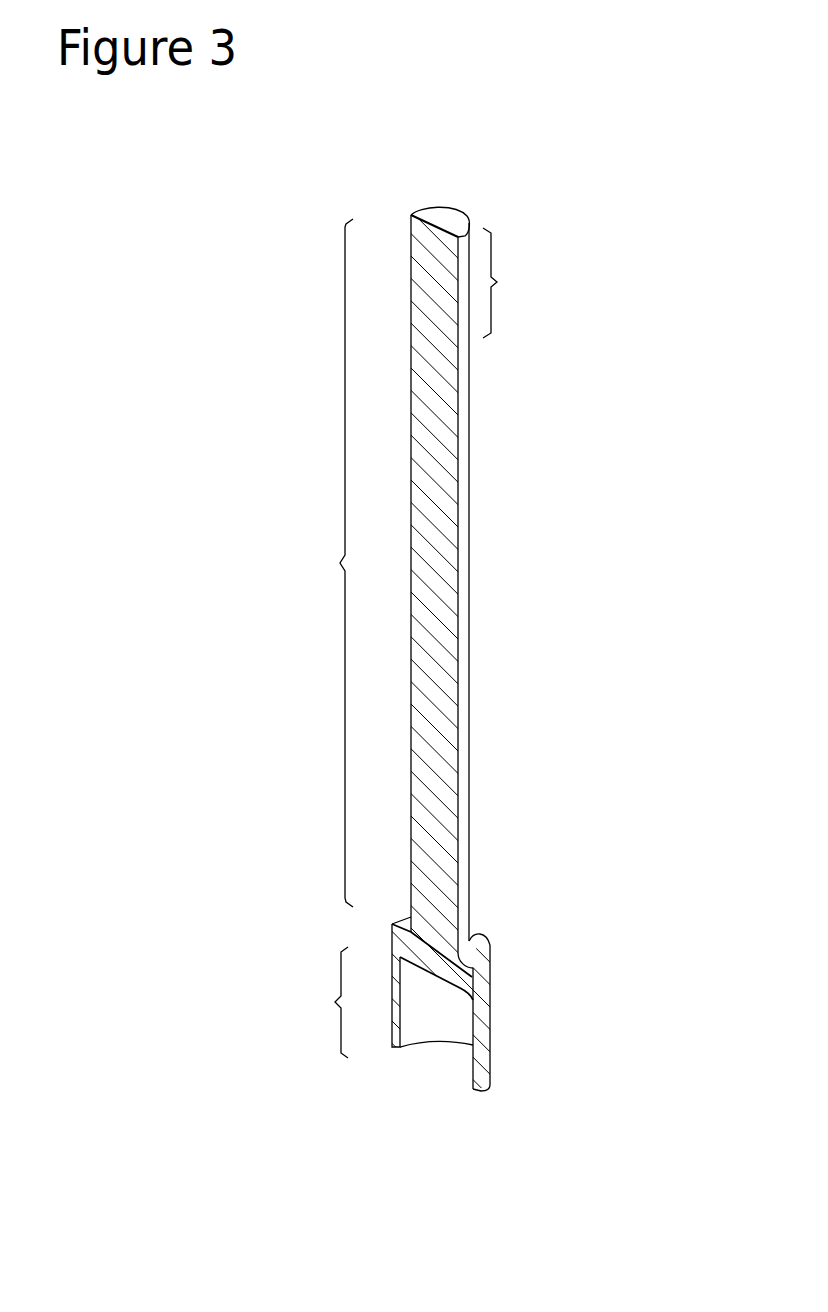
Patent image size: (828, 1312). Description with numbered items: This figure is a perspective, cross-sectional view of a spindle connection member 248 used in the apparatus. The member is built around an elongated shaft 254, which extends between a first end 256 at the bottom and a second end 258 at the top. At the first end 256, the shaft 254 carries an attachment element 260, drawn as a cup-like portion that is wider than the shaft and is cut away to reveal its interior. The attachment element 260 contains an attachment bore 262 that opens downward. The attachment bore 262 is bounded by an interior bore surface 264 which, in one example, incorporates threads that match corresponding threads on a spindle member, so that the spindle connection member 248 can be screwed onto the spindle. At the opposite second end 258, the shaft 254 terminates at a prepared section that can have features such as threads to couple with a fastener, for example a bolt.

The spindle connection member 248 is at (530, 432).
The shaft 254 is at (322, 563).
The first end 256 is at (317, 1002).
The second end 258 is at (513, 283).
The attachment element 260 is at (535, 997).
The attachment bore 262 is at (439, 1066).
The interior bore surface 264 is at (420, 1017).